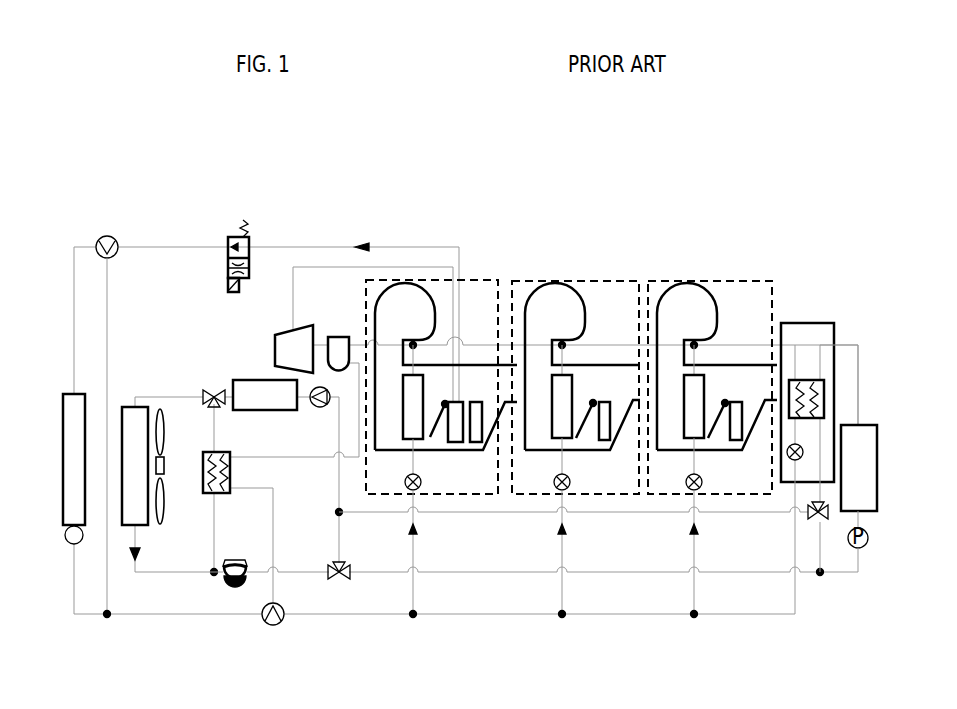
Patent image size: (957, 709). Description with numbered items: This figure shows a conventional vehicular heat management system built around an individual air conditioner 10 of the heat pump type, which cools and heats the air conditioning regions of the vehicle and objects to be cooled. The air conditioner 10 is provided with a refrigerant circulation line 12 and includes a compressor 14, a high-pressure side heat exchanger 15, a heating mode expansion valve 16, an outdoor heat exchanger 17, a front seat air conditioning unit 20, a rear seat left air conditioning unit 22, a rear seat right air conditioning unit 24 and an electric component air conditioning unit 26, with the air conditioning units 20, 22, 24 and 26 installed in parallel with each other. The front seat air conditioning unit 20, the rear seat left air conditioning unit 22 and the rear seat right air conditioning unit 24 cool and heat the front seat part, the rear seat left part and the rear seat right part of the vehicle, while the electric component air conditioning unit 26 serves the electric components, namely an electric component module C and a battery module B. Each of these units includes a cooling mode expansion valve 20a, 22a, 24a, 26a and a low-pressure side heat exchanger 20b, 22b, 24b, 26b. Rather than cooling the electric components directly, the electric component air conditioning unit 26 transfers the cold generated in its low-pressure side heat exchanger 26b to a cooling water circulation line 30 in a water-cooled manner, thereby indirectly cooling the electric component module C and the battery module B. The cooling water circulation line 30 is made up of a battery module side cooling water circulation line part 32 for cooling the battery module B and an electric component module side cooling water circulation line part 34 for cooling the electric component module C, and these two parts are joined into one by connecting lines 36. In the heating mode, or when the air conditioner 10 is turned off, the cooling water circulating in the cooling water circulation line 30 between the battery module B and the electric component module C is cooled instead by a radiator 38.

The air conditioner 10 is at (331, 238).
The refrigerant circulation line 12 is at (288, 247).
The compressor 14 is at (283, 328).
The high-pressure side heat exchanger 15 is at (463, 402).
The heating mode expansion valve 16 is at (230, 237).
The outdoor heat exchanger 17 is at (62, 426).
The front seat air conditioning unit 20 is at (442, 427).
The cooling mode expansion valve 20a is at (406, 489).
The low-pressure side heat exchanger 20b is at (417, 442).
The rear seat left air conditioning unit 22 is at (576, 427).
The cooling mode expansion valve 22a is at (555, 489).
The low-pressure side heat exchanger 22b is at (566, 442).
The rear seat right air conditioning unit 24 is at (722, 439).
The cooling mode expansion valve 24a is at (700, 490).
The low-pressure side heat exchanger 24b is at (698, 442).
The electric component air conditioning unit 26 is at (830, 436).
The cooling mode expansion valve 26a is at (787, 460).
The low-pressure side heat exchanger 26b is at (810, 418).
The cooling water circulation line 30 is at (859, 336).
The battery module side cooling water circulation line part 32 is at (860, 377).
The electric component module side cooling water circulation line part 34 is at (320, 576).
The connecting lines 36 is at (639, 512).
The radiator 38 is at (128, 527).
The battery module B is at (868, 465).
The electric component module C is at (250, 380).